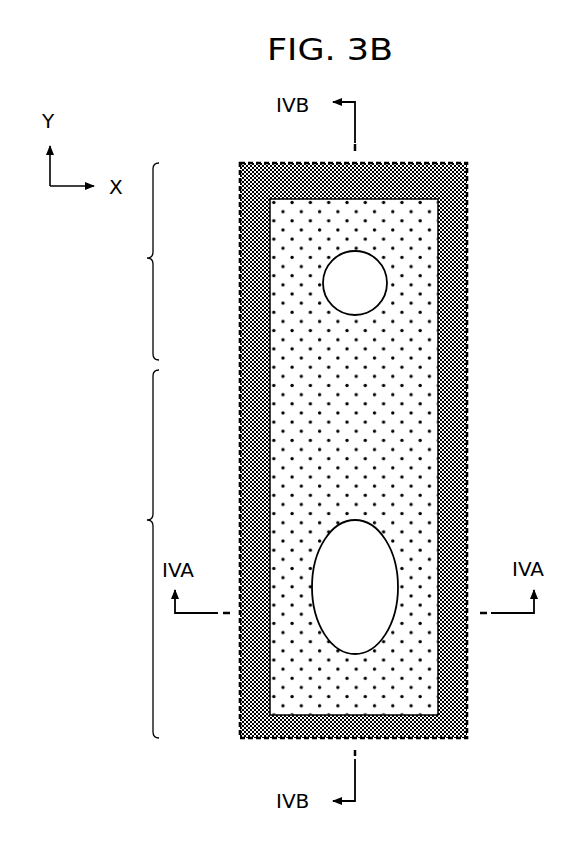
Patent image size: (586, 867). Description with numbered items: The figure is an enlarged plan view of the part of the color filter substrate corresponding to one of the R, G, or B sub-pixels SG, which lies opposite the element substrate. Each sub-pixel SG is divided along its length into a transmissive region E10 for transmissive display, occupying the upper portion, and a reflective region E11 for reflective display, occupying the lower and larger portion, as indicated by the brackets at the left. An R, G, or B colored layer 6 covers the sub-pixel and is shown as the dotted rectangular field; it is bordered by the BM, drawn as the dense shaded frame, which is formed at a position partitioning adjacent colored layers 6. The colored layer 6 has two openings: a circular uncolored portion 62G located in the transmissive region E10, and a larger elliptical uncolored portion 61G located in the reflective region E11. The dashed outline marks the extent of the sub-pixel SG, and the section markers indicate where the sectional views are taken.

The colored layer 6 is at (413, 401).
The uncolored portion 61G is at (383, 540).
The uncolored portion 62G is at (383, 260).
The element BM is at (467, 297).
The sub-pixel SG is at (402, 163).
The transmissive region E10 is at (131, 261).
The reflective region E11 is at (131, 554).